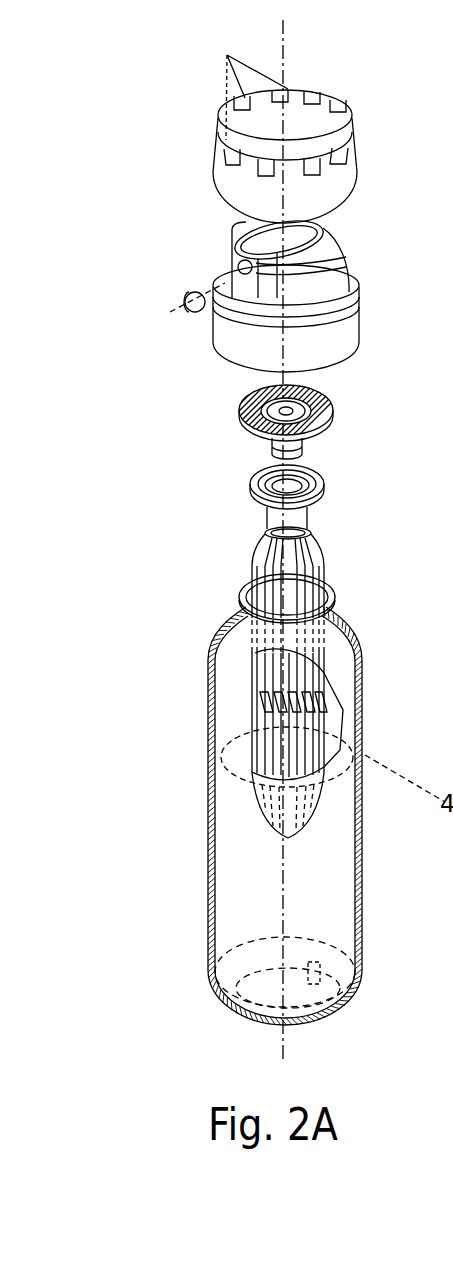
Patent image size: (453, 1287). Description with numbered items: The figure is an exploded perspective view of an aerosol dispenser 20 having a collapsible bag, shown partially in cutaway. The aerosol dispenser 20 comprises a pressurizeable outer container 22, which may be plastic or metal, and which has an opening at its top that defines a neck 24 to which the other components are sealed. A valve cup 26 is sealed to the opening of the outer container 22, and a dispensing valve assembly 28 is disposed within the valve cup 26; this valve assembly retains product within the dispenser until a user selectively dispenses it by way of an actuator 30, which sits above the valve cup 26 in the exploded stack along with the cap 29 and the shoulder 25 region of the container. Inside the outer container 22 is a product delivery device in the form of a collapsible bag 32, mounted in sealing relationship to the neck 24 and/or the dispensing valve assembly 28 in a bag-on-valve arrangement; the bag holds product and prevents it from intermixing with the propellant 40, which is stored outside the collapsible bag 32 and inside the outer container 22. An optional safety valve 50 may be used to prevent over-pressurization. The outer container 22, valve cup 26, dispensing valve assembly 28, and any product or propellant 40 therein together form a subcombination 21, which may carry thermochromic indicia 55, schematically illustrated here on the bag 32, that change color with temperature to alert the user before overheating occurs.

The aerosol dispenser 20 is at (180, 722).
The subcombination 21 is at (357, 413).
The outer container 22 is at (232, 903).
The neck 24 is at (247, 573).
The shoulder 25 is at (222, 617).
The valve cup 26 is at (257, 480).
The dispensing valve assembly 28 is at (244, 395).
The cap 29 is at (173, 232).
The actuator 30 is at (380, 372).
The collapsible bag 32 is at (277, 734).
The propellant 40 is at (260, 883).
The safety valve 50 is at (326, 548).
The indicia 55 is at (253, 690).